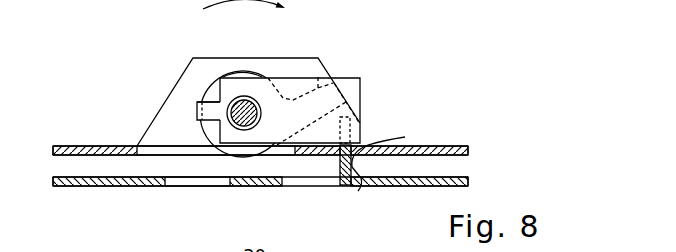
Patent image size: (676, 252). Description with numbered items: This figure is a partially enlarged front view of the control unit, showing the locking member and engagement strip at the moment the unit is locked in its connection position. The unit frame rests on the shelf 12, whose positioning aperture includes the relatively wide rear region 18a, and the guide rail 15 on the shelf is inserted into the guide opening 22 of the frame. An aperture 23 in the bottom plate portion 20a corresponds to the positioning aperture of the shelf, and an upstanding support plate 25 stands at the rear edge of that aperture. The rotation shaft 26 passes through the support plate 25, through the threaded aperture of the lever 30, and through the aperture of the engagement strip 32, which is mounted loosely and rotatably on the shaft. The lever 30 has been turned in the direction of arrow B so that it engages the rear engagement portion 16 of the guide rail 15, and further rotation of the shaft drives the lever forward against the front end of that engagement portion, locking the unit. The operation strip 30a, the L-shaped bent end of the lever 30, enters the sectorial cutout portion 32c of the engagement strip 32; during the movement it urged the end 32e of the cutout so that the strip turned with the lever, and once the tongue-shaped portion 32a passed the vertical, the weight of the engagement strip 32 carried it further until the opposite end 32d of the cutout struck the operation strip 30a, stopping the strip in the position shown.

The shelf 12 is at (453, 177).
The guide rail 15 is at (351, 184).
The rear engagement portion 16 is at (360, 125).
The rear region 18a is at (173, 182).
The bottom plate portion 20a is at (453, 146).
The guide opening 22 is at (391, 155).
The aperture 23 is at (153, 152).
The support plate 25 is at (207, 57).
The rotation shaft 26 is at (226, 103).
The lever 30 is at (352, 77).
The operation strip 30a is at (203, 99).
The engagement strip 32 is at (252, 158).
The tongue-shaped portion 32a is at (334, 83).
The sectorial cutout portion 32c is at (252, 70).
The end of cutout portion 32d is at (197, 113).
The end of cutout portion 32e is at (287, 96).